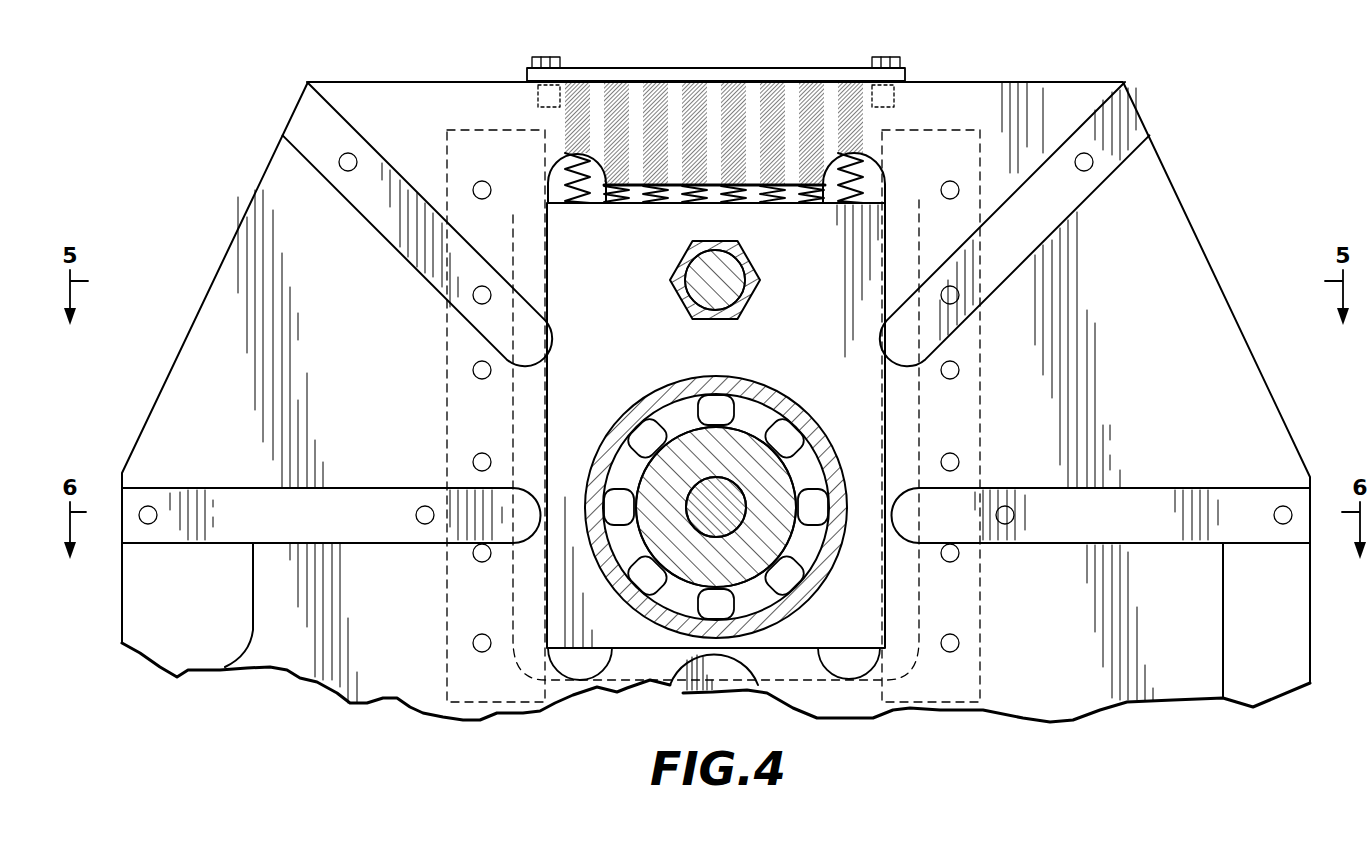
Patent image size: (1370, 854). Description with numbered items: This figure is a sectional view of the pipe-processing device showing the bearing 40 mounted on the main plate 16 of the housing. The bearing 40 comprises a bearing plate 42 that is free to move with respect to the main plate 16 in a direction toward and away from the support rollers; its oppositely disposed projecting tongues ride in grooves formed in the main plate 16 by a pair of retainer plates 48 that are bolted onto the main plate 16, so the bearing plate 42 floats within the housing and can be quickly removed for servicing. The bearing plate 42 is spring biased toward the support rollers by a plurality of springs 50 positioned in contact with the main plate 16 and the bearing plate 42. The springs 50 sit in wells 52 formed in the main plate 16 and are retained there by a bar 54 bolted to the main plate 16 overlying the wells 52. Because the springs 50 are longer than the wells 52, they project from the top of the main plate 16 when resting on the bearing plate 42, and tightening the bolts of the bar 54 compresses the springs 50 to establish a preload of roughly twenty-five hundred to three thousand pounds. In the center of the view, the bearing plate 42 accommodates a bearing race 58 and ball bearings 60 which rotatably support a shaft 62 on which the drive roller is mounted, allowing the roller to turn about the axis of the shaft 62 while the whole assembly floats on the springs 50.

The main plate 16 is at (1170, 213).
The bearing 40 is at (860, 277).
The bearing plate 42 is at (567, 220).
The retainer plates 48 is at (458, 418).
The springs 50 is at (817, 183).
The wells 52 is at (560, 118).
The bar 54 is at (808, 68).
The bearing race 58 is at (714, 483).
The ball bearings 60 is at (783, 437).
The shaft 62 is at (670, 447).